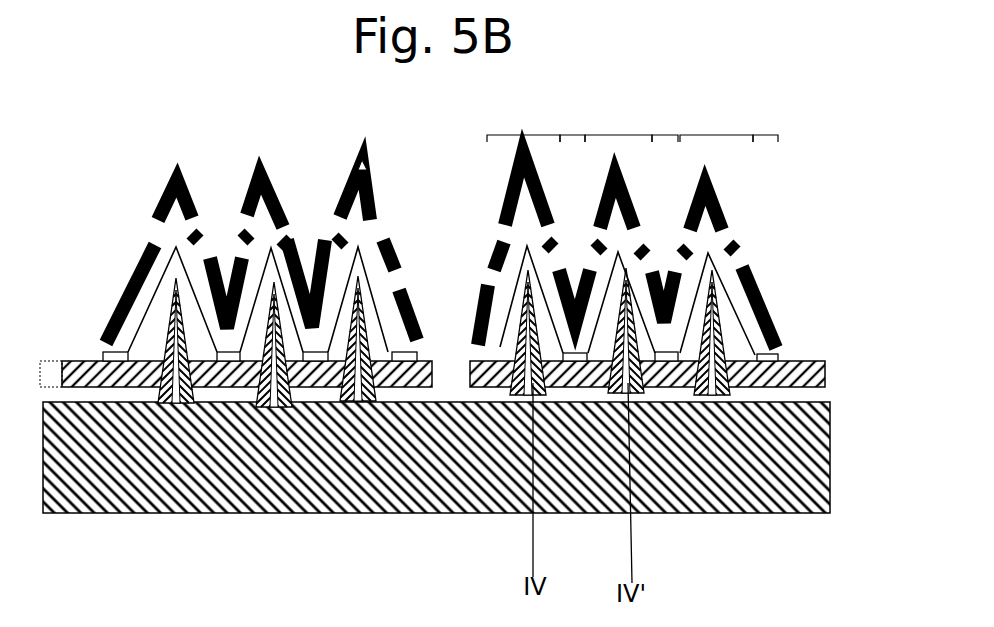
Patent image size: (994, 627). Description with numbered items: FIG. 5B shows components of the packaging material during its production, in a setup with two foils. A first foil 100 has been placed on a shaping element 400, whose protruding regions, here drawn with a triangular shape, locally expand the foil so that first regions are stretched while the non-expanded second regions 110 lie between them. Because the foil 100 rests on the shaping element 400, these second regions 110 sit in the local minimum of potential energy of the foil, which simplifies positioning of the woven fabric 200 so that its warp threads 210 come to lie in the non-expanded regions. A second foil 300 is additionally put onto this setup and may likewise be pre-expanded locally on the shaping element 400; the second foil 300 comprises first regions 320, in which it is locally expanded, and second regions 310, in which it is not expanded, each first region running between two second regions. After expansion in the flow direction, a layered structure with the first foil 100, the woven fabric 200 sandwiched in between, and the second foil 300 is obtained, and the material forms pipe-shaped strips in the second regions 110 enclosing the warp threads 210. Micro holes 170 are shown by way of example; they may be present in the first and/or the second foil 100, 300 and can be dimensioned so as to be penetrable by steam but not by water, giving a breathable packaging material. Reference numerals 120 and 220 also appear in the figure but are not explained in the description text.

The first foil 100 is at (824, 376).
The second regions 110 is at (70, 390).
The electrode pad 120 is at (118, 362).
The micro holes 170 is at (157, 221).
The woven fabric 200 is at (457, 271).
The warp threads 210 is at (394, 434).
The electrode layer 220 is at (150, 293).
The second foil 300 is at (752, 272).
The second regions 310 is at (572, 135).
The first regions 320 is at (523, 135).
The shaping element 400 is at (833, 493).